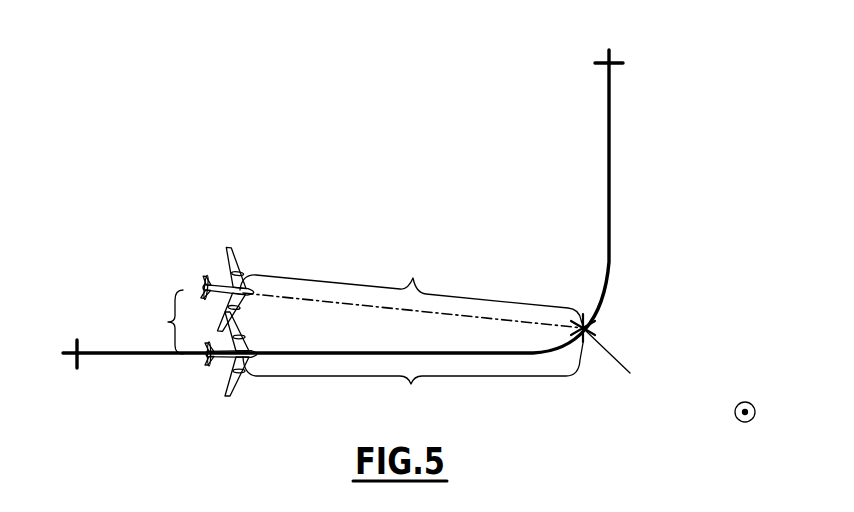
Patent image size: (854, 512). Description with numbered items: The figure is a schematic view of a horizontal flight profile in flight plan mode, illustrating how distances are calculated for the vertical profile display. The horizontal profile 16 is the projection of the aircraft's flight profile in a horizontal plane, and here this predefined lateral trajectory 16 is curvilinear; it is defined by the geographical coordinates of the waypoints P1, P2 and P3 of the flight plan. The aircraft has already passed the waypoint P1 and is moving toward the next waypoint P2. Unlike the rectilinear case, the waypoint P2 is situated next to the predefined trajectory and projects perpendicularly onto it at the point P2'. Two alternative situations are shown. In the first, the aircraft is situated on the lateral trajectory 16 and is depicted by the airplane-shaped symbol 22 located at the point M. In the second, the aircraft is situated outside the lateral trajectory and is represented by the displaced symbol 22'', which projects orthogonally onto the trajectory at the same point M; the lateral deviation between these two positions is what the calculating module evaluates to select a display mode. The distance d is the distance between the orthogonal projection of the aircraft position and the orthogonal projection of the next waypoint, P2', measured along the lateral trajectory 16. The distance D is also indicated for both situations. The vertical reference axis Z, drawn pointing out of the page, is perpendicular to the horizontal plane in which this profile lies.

The horizontal profile 16 is at (645, 180).
The symbol 22 is at (188, 378).
The symbol 22'' is at (208, 288).
The waypoint P1 is at (57, 354).
The waypoint P2 is at (628, 352).
The projection of waypoint P2' is at (582, 313).
The waypoint P3 is at (621, 63).
The point M is at (219, 366).
The distance D is at (411, 287).
The distance d is at (413, 377).
The vertical reference axis Z is at (752, 402).